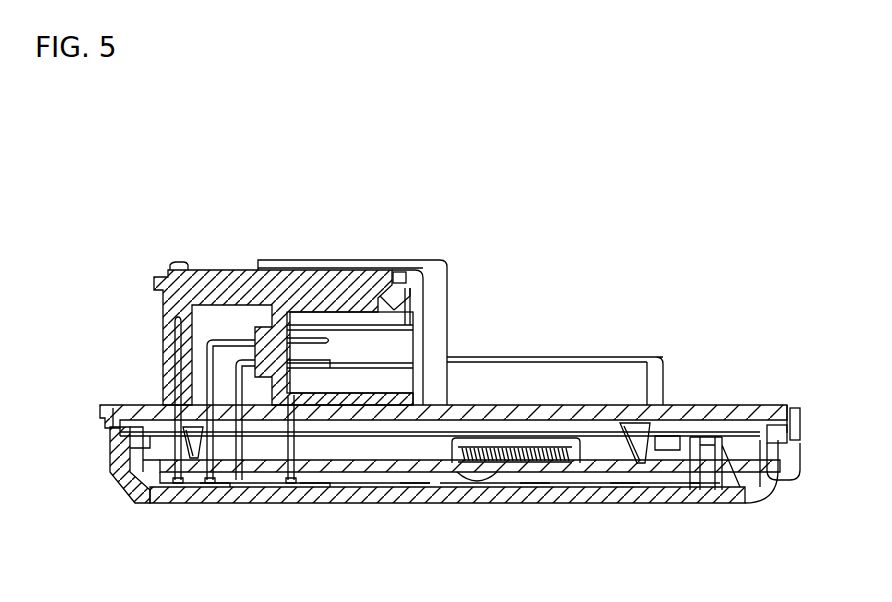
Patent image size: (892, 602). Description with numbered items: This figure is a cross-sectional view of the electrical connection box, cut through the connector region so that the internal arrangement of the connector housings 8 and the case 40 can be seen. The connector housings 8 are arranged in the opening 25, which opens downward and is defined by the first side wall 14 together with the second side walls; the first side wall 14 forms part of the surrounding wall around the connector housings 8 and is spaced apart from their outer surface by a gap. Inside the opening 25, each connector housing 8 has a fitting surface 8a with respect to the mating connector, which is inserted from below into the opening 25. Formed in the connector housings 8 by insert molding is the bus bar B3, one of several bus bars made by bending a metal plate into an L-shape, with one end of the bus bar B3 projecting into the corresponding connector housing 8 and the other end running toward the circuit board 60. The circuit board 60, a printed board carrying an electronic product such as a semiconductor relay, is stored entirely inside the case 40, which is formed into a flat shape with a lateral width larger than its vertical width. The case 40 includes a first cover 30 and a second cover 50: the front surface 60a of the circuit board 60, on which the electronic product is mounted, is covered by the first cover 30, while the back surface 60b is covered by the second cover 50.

The connector housing 8 is at (366, 350).
The fitting surface 8a is at (412, 372).
The first side wall 14 is at (367, 262).
The opening 25 is at (448, 323).
The first cover 30 is at (775, 417).
The case 40 is at (805, 405).
The second cover 50 is at (784, 423).
The circuit board 60 is at (258, 472).
The front surface 60a is at (615, 450).
The back surface 60b is at (600, 452).
The bus bar B3 is at (322, 365).